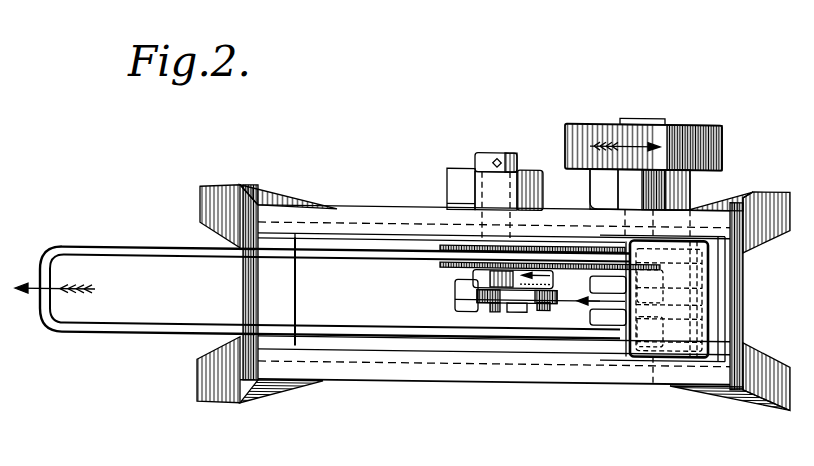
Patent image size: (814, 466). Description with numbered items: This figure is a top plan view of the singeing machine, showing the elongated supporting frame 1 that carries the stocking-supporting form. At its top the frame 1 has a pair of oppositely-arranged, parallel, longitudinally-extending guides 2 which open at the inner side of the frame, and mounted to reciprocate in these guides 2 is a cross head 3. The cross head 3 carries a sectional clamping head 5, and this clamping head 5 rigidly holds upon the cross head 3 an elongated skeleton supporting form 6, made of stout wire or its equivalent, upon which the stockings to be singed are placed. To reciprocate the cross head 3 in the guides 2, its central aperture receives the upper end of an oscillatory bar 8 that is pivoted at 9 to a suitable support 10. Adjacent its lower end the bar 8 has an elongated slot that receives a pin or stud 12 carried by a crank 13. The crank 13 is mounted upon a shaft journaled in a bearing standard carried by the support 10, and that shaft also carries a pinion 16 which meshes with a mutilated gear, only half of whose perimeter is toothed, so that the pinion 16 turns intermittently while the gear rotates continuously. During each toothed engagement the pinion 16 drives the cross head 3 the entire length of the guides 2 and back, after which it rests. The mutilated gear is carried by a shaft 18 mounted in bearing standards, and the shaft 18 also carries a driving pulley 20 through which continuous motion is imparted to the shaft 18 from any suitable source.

The supporting frame 1 is at (207, 222).
The guides 2 is at (363, 230).
The cross head 3 is at (625, 356).
The sectional clamping head 5 is at (702, 281).
The skeleton supporting form 6 is at (173, 251).
The oscillatory bar 8 is at (518, 309).
The pivot 9 is at (489, 313).
The support 10 is at (455, 303).
The pin or stud 12 is at (541, 307).
The crank 13 is at (556, 274).
The pinion 16 is at (446, 263).
The shaft 18 is at (637, 118).
The driving pulley 20 is at (692, 122).